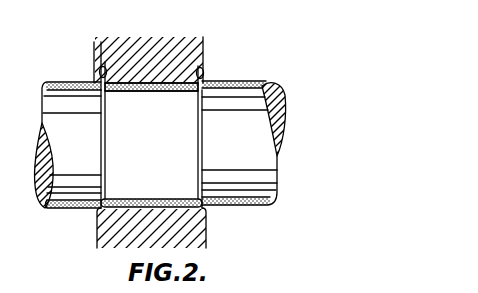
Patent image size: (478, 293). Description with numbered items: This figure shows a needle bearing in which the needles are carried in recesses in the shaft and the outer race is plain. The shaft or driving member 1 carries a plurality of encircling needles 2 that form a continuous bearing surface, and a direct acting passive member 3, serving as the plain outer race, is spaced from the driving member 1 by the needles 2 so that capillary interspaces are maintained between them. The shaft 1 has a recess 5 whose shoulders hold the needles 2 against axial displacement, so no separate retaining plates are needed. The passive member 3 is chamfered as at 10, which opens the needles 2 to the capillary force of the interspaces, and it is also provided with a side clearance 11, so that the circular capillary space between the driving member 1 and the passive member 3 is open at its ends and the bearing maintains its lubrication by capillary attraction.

The driving member 1 is at (55, 123).
The needles 2 is at (163, 92).
The passive member 3 is at (175, 53).
The recess 5 is at (108, 162).
The chamfers 10 is at (99, 66).
The side clearance 11 is at (95, 81).